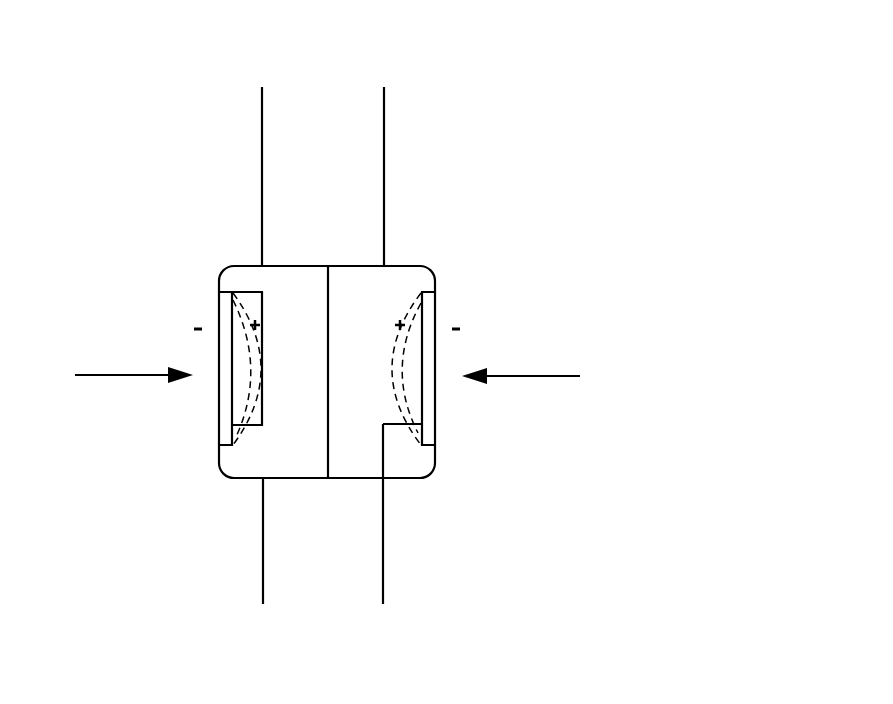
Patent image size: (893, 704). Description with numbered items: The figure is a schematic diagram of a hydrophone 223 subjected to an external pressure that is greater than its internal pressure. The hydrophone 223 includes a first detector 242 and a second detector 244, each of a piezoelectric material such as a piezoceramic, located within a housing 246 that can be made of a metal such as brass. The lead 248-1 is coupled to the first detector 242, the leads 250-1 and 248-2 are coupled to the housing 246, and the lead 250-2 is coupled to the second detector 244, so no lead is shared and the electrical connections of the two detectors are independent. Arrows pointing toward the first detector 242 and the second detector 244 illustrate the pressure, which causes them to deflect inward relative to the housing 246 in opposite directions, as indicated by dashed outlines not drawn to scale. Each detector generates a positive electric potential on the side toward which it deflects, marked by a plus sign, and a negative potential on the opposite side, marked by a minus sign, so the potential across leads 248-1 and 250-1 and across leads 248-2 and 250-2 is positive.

The hydrophone 223 is at (148, 68).
The housing 246 is at (401, 266).
The lead 248-1 is at (262, 149).
The lead 248-2 is at (384, 148).
The lead 250-1 is at (263, 548).
The lead 250-2 is at (383, 548).
The first detector 242 is at (225, 300).
The second detector 244 is at (428, 301).